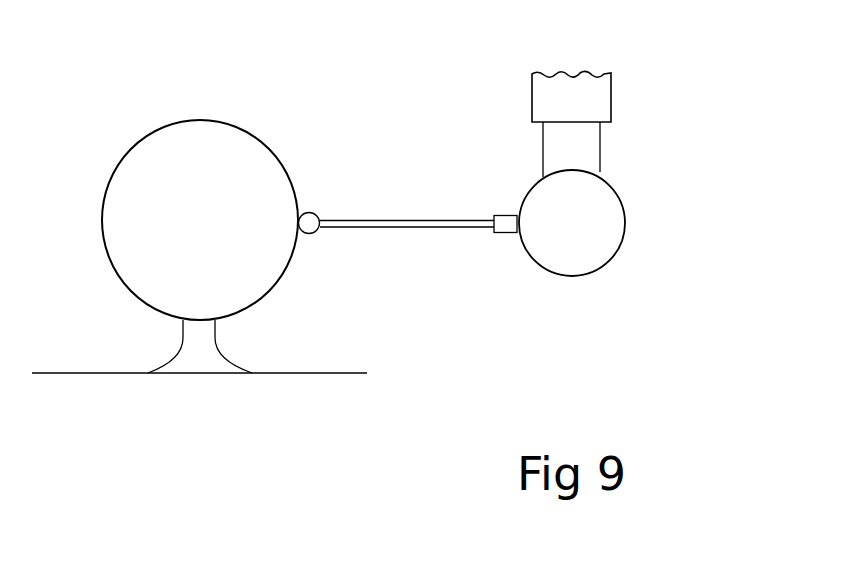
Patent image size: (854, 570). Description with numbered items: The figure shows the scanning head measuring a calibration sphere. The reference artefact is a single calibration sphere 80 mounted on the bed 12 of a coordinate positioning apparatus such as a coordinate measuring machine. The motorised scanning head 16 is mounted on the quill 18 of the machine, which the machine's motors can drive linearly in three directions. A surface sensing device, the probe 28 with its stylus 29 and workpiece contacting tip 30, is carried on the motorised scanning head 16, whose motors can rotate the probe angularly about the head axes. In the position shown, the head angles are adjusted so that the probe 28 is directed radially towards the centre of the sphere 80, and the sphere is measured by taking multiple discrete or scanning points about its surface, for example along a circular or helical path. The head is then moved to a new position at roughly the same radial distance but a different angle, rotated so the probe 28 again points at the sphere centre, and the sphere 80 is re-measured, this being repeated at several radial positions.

The calibration sphere 80 is at (233, 138).
The table 12 is at (319, 373).
The workpiece contacting tip 30 is at (310, 221).
The stylus 29 is at (432, 219).
The probe 28 is at (504, 230).
The motorised scanning head 16 is at (603, 203).
The quill 18 is at (600, 88).